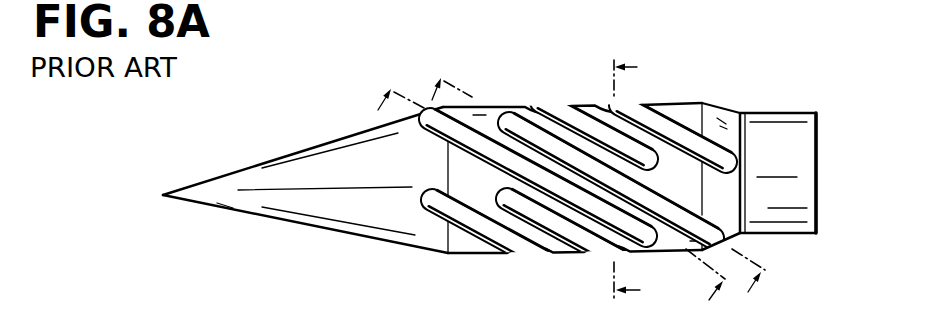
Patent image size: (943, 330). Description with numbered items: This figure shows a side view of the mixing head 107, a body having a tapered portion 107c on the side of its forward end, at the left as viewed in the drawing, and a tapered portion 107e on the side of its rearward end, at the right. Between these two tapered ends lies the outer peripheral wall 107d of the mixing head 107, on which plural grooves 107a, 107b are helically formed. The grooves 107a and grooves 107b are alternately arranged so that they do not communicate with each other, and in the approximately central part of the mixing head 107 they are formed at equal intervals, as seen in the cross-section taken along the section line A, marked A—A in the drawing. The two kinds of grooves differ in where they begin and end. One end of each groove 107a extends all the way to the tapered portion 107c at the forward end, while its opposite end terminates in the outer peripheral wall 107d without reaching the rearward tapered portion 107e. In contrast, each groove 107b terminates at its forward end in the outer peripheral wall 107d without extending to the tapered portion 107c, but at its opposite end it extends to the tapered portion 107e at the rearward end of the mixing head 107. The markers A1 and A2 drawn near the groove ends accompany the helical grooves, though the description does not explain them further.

The mixing head 107 is at (485, 100).
The grooves 107a is at (558, 108).
The grooves 107b is at (662, 106).
The tapered portion 107c is at (303, 167).
The outer peripheral wall 107d is at (693, 188).
The tapered portion 107e is at (723, 120).
The section line A- A is at (635, 179).
The helix angle A1 is at (546, 200).
The helix angle A2 is at (593, 189).